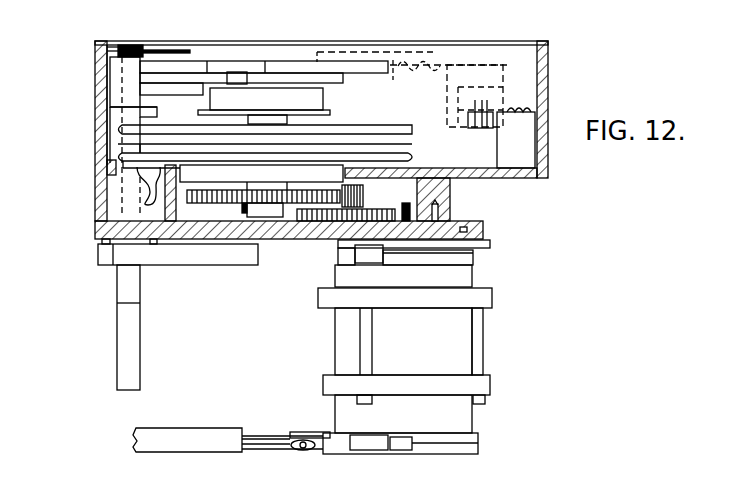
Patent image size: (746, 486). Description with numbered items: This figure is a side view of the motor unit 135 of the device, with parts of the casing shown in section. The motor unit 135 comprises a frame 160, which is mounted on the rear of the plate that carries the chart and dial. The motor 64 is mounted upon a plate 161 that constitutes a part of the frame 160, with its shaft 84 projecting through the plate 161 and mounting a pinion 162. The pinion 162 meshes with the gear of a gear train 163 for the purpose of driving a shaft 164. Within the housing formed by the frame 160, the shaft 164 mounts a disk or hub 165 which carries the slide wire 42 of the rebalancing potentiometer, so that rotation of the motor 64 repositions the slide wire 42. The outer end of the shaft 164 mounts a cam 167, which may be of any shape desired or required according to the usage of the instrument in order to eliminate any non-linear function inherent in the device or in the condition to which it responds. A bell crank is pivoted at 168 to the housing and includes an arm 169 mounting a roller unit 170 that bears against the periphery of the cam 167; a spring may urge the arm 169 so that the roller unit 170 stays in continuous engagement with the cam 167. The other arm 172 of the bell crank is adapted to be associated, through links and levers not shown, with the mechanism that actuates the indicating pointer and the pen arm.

The motor unit 135 is at (93, 96).
The frame 160 is at (548, 176).
The plate 161 is at (288, 237).
The bell crank pivot 168 is at (132, 44).
The arm 169 is at (195, 61).
The roller unit 170 is at (236, 72).
The other arm 172 is at (302, 62).
The cam 167 is at (323, 85).
The disk or hub 165 is at (358, 125).
The slide wire 42 is at (414, 142).
The gear train 163 is at (318, 208).
The shaft 164 is at (265, 218).
The pinion 162 is at (406, 200).
The shaft 84 is at (403, 247).
The motor 64 is at (460, 338).